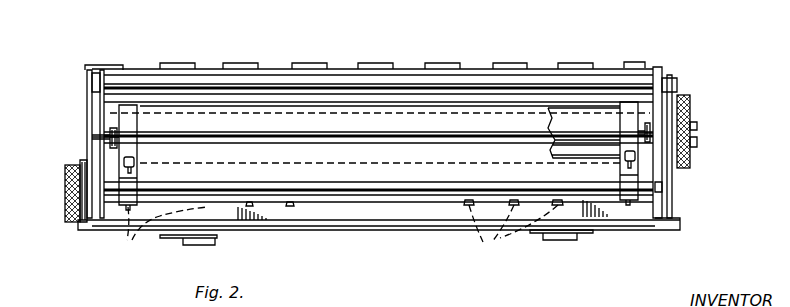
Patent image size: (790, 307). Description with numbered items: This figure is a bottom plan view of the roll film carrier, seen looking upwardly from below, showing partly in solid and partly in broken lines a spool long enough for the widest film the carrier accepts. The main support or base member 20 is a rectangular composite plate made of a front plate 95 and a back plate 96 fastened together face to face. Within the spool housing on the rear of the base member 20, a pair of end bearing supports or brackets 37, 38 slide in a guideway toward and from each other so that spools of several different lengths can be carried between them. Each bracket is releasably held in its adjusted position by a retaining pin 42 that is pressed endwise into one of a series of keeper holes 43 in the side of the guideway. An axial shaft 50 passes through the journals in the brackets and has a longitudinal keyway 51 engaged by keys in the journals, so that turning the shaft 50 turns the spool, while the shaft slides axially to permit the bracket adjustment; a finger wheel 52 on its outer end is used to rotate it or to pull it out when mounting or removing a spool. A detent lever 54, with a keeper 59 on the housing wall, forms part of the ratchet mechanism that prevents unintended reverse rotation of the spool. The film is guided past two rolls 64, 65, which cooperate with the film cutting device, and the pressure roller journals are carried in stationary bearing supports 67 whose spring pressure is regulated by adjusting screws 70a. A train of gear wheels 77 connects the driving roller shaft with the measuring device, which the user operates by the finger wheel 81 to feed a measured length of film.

The main support or base member 20 is at (338, 230).
The end bearing support or bracket 37 is at (128, 105).
The end bearing support or bracket 38 is at (627, 103).
The retaining pin 42 is at (140, 172).
The keeper holes 43 is at (336, 234).
The axial shaft 50 is at (347, 144).
The longitudinal keyway 51 is at (400, 143).
The finger wheel 52 is at (690, 103).
The detent lever 54 is at (675, 198).
The keeper 59 is at (677, 88).
The roll 64 is at (395, 95).
The roll 65 is at (343, 84).
The stationary bearing supports 67 is at (97, 98).
The adjusting screws 70a is at (100, 210).
The train of gear wheels 77 is at (85, 160).
The operating or finger wheel 81 is at (68, 220).
The front plate 95 is at (240, 220).
The back plate 96 is at (284, 216).